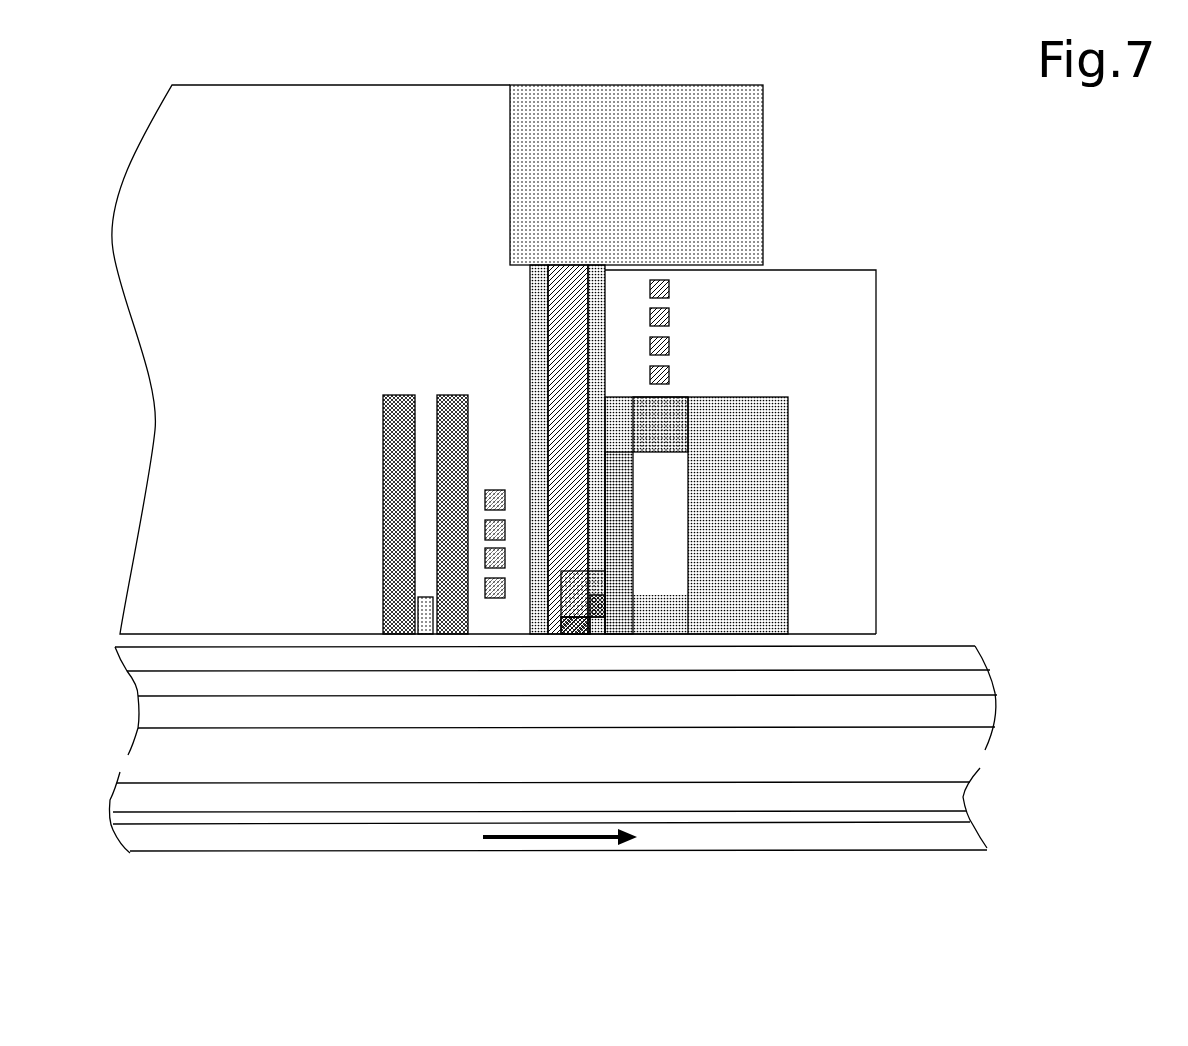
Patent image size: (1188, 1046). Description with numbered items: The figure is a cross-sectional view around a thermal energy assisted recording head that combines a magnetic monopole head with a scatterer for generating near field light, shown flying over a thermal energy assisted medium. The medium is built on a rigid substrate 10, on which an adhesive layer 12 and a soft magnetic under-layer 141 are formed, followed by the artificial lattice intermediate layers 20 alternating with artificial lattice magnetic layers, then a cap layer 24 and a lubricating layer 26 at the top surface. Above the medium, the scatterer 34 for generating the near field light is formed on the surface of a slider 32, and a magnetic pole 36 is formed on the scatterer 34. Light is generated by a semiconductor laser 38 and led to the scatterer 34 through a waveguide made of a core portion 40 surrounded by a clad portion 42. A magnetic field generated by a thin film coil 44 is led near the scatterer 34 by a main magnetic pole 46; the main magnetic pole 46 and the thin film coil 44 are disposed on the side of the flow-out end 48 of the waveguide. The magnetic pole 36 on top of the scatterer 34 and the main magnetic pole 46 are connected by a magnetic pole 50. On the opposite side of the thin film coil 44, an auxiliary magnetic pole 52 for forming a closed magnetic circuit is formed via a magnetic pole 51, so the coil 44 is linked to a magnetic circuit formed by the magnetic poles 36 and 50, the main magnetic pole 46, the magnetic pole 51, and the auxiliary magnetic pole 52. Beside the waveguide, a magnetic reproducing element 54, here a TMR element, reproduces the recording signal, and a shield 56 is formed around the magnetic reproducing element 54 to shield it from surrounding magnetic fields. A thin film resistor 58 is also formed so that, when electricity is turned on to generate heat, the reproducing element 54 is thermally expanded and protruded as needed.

The rigid substrate 10 is at (970, 837).
The adhesive layer 12 is at (967, 815).
The soft magnetic under-layer 141 is at (960, 798).
The artificial lattice intermediate layer 20 is at (977, 715).
The cap layer 24 is at (980, 685).
The lubricating layer 26 is at (980, 652).
The slider 32 is at (494, 359).
The scatterer 34 is at (565, 635).
The magnetic pole 36 is at (603, 598).
The semiconductor laser 38 is at (532, 238).
The core portion 40 is at (517, 449).
The clad portion 42 is at (543, 297).
The thin film coil 44 is at (672, 346).
The main magnetic pole 46 is at (628, 518).
The flow-out end 48 is at (880, 635).
The magnetic pole 50 is at (608, 582).
The magnetic pole 51 is at (660, 410).
The auxiliary magnetic pole 52 is at (765, 442).
The magnetic reproducing element 54 is at (417, 602).
The shield 56 is at (453, 397).
The thin film resistor 58 is at (487, 558).